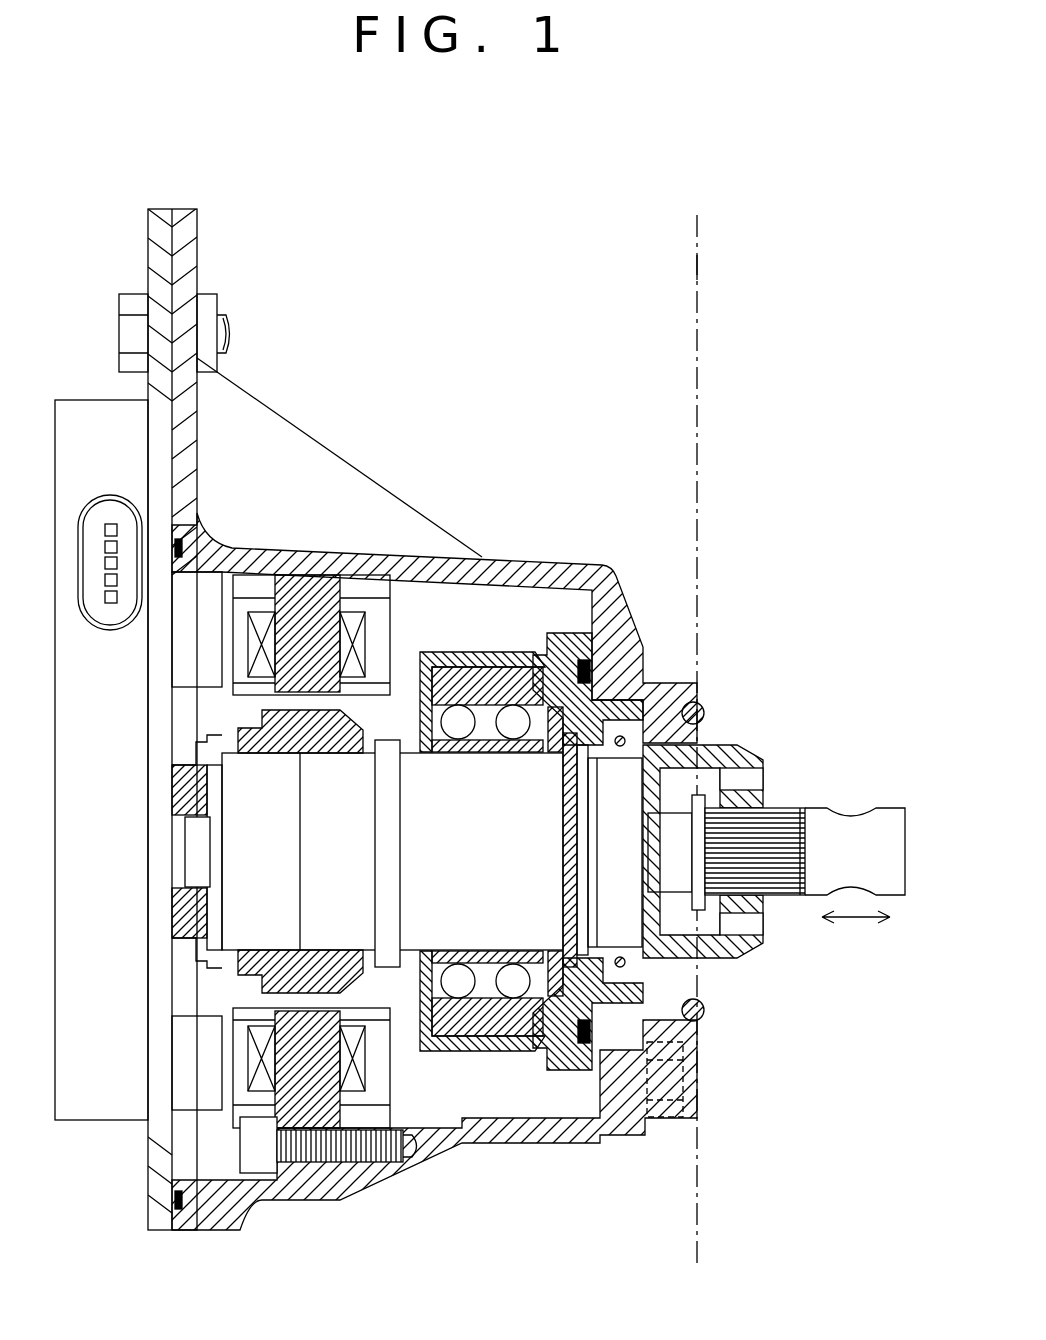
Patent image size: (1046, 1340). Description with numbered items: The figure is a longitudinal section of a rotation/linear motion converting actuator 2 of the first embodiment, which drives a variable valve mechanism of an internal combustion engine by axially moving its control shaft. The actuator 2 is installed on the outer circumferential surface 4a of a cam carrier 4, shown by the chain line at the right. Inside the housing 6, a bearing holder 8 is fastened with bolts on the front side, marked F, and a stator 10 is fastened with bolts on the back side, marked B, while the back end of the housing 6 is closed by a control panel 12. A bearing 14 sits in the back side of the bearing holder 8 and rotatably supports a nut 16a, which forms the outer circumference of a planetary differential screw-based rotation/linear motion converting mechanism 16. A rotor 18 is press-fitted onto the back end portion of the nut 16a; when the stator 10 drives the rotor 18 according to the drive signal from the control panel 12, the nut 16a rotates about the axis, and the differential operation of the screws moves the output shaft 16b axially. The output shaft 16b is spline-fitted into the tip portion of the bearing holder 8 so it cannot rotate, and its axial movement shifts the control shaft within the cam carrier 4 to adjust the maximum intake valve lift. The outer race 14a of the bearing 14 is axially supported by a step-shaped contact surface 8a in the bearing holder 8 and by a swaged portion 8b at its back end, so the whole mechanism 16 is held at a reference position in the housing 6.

The rotation/linear motion converting actuator 2 is at (459, 322).
The cam carrier 4 is at (745, 250).
The outer circumferential surface 4a is at (697, 266).
The housing 6 is at (563, 566).
The bearing holder 8 is at (568, 635).
The contact surface 8a is at (522, 673).
The swaged portion 8b is at (423, 667).
The stator 10 is at (302, 588).
The control panel 12 is at (72, 412).
The bearing 14 is at (468, 755).
The outer race 14a is at (457, 672).
The planetary differential screw-based rotation/linear motion converting mechanism 16 is at (228, 866).
The nut 16a is at (440, 1052).
The output shaft 16b is at (824, 822).
The rotor 18 is at (340, 760).